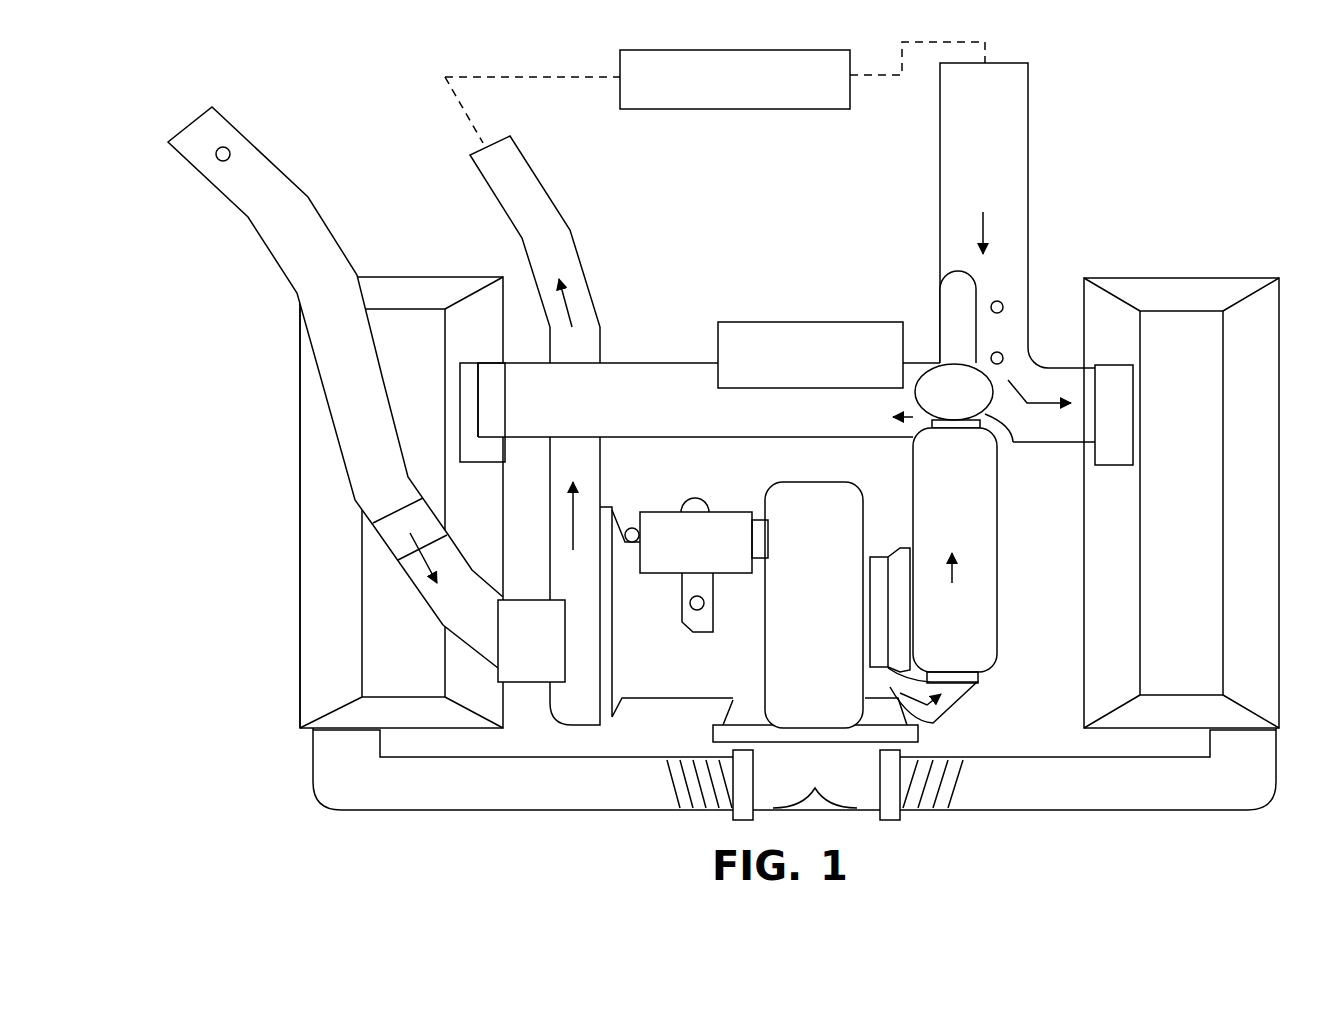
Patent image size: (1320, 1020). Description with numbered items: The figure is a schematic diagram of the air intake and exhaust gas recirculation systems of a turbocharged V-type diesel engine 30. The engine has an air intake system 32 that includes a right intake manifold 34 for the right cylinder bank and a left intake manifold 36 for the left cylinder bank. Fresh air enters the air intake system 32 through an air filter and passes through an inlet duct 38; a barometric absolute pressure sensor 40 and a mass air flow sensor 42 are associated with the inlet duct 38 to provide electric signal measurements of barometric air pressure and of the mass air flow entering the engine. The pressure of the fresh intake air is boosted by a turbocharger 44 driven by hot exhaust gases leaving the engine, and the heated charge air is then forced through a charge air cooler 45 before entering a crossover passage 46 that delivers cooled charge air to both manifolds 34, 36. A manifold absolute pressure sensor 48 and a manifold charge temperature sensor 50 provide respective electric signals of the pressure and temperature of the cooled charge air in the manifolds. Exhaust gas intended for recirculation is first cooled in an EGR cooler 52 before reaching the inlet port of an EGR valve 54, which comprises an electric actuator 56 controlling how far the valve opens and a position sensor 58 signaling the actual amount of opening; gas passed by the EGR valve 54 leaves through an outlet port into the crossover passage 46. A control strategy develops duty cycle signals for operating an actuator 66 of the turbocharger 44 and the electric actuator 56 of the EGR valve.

The V-type diesel engine 30 is at (294, 761).
The air intake system 32 is at (446, 274).
The right intake manifold 34 is at (303, 603).
The left intake manifold 36 is at (1083, 682).
The inlet duct 38 is at (340, 443).
The barometric absolute pressure (BAP) sensor 40 is at (258, 155).
The mass air flow (MAF) sensor 42 is at (418, 520).
The turbocharger 44 is at (804, 662).
The charge air cooler 45 is at (655, 110).
The crossover passage 46 is at (660, 438).
The manifold absolute pressure (MAP) sensor 48 is at (1003, 305).
The manifold charge temperature (MCT) sensor 50 is at (1003, 355).
The EGR cooler 52 is at (937, 615).
The EGR valve 54 is at (992, 408).
The electric actuator 56 is at (730, 353).
The position sensor 58 is at (860, 442).
The actuator 66 is at (657, 573).